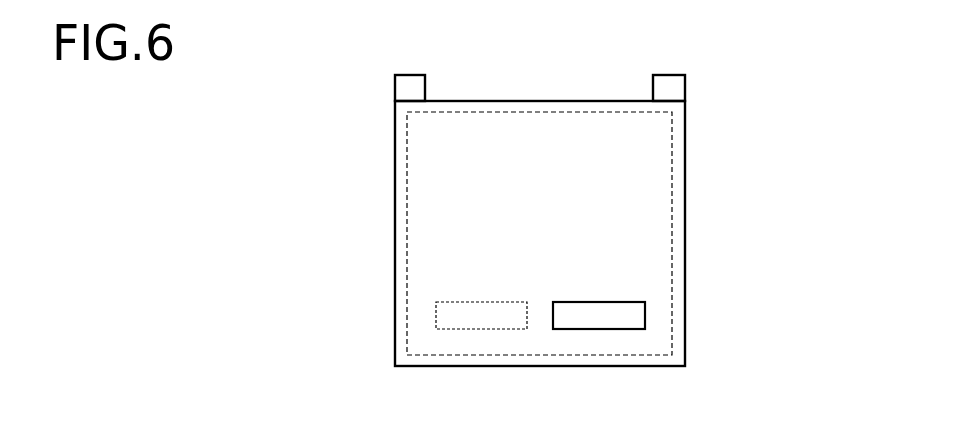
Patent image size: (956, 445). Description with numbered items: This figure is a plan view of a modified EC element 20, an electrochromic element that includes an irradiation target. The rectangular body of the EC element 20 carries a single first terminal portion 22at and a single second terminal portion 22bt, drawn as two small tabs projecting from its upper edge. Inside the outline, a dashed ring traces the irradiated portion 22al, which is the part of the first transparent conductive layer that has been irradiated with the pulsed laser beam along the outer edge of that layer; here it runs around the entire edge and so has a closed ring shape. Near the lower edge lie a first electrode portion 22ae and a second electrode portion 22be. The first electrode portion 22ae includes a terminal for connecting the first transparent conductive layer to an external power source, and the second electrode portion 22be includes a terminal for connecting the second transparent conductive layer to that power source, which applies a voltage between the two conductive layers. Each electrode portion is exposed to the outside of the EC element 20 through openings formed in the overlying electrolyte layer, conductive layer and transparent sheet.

The EC element 20 is at (762, 148).
The irradiated portion 22al is at (477, 367).
The second terminal portion 22bt is at (408, 75).
The first terminal portion 22at is at (668, 75).
The first electrode portion 22ae is at (436, 311).
The second electrode portion 22be is at (645, 312).